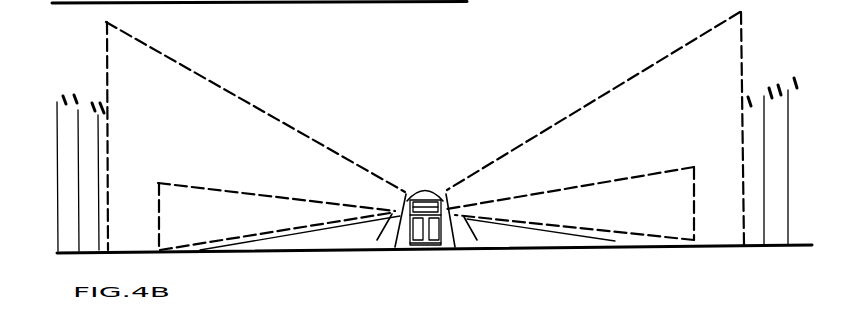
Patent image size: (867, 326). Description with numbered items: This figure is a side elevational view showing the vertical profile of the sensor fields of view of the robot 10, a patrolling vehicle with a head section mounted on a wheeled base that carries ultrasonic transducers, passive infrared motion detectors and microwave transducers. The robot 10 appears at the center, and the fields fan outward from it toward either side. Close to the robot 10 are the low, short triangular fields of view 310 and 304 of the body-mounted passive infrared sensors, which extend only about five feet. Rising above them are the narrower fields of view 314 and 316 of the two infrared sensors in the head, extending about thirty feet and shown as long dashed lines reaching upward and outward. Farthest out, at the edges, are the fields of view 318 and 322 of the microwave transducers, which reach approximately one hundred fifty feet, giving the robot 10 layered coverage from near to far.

The robot 10 is at (427, 191).
The triangular field of view 304 is at (570, 187).
The triangular field of view 310 is at (279, 195).
The field of view 314 is at (287, 121).
The field of view 316 is at (568, 117).
The field of view 318 is at (80, 145).
The field of view 322 is at (771, 136).